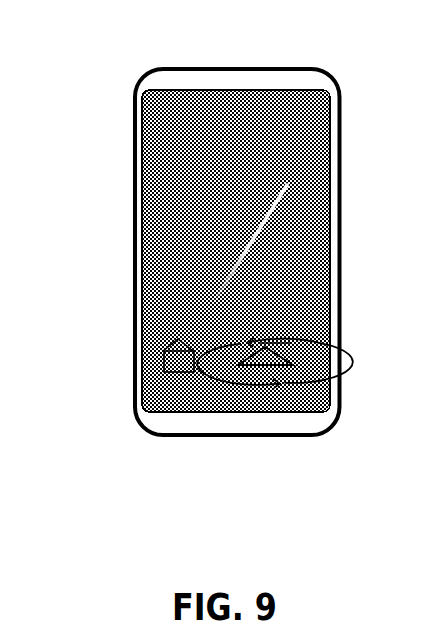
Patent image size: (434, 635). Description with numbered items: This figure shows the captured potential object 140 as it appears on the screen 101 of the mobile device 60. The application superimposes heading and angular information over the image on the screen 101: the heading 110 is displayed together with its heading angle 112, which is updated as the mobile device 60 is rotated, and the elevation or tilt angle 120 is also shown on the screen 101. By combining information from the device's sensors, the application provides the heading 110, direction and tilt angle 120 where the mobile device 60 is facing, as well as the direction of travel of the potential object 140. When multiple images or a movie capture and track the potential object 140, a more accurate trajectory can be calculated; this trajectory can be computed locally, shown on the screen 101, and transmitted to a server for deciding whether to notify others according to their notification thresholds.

The mobile device 60 is at (227, 67).
The screen 101 is at (145, 103).
The potential object 140 is at (283, 193).
The tilt angle 120 is at (163, 366).
The heading 110 is at (322, 370).
The heading angle 112 is at (290, 353).